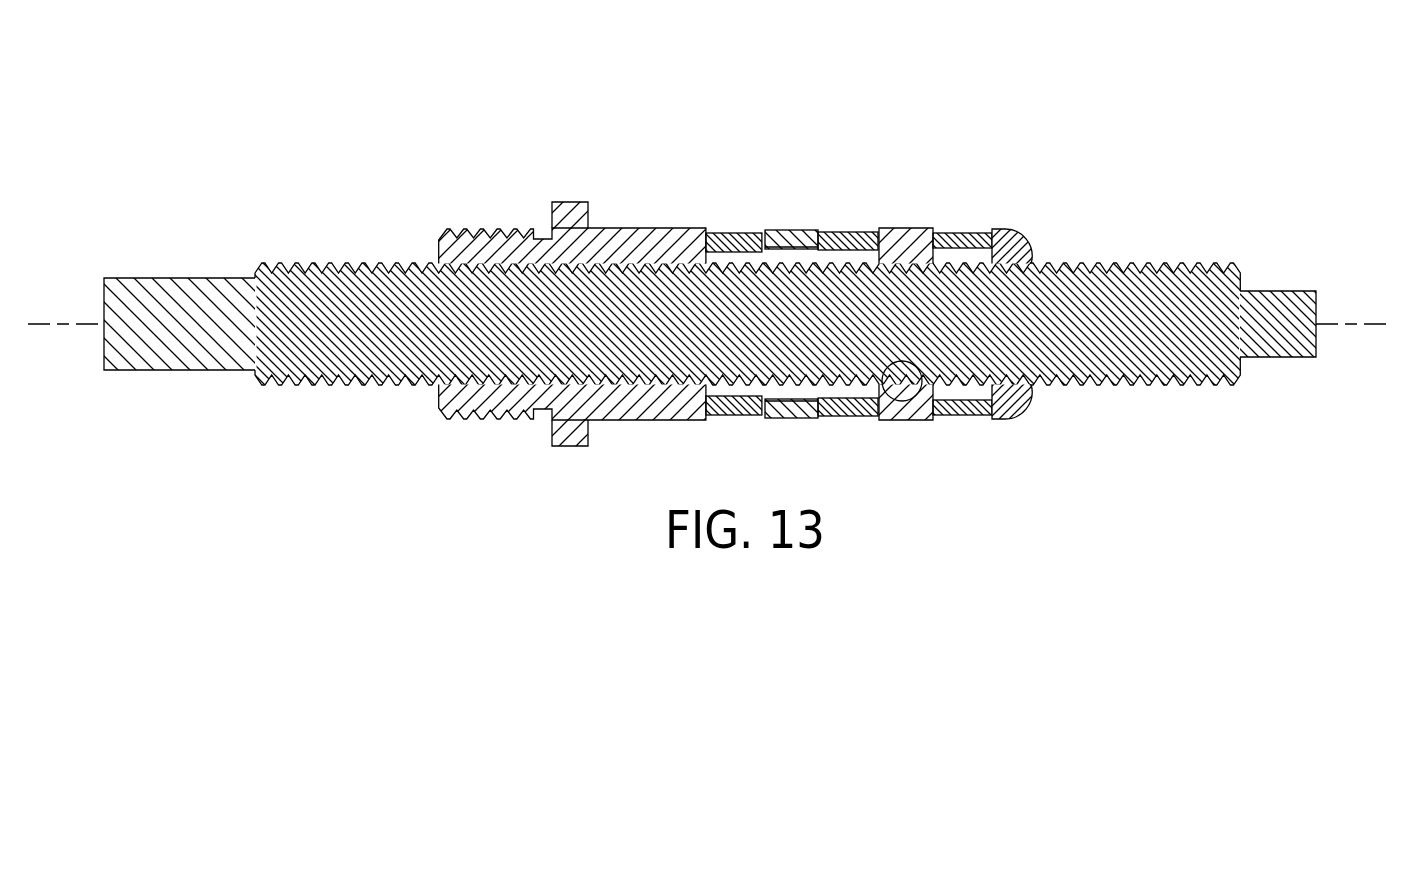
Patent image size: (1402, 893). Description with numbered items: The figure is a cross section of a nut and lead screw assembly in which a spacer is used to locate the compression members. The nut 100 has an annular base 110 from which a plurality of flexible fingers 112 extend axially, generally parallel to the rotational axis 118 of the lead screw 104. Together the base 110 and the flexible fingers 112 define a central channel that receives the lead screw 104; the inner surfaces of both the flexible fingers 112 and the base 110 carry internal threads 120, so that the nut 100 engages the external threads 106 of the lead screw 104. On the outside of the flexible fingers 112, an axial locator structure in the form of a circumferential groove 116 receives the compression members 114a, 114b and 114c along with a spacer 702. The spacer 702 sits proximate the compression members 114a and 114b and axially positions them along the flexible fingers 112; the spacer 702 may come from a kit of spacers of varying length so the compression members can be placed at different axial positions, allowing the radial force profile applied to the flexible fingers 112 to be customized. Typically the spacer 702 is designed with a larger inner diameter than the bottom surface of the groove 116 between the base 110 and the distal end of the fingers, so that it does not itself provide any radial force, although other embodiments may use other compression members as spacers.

The nut 100 is at (298, 141).
The lead screw 104 is at (1283, 291).
The external threads 106 is at (1132, 264).
The annular base 110 is at (562, 201).
The flexible fingers 112 is at (1025, 245).
The compression member 114a is at (744, 232).
The compression member 114b is at (857, 231).
The compression member 114c is at (980, 232).
The circumferential groove 116 is at (796, 175).
The rotational axis 118 is at (1360, 323).
The internal threads 120 is at (920, 383).
The spacer 702 is at (800, 420).